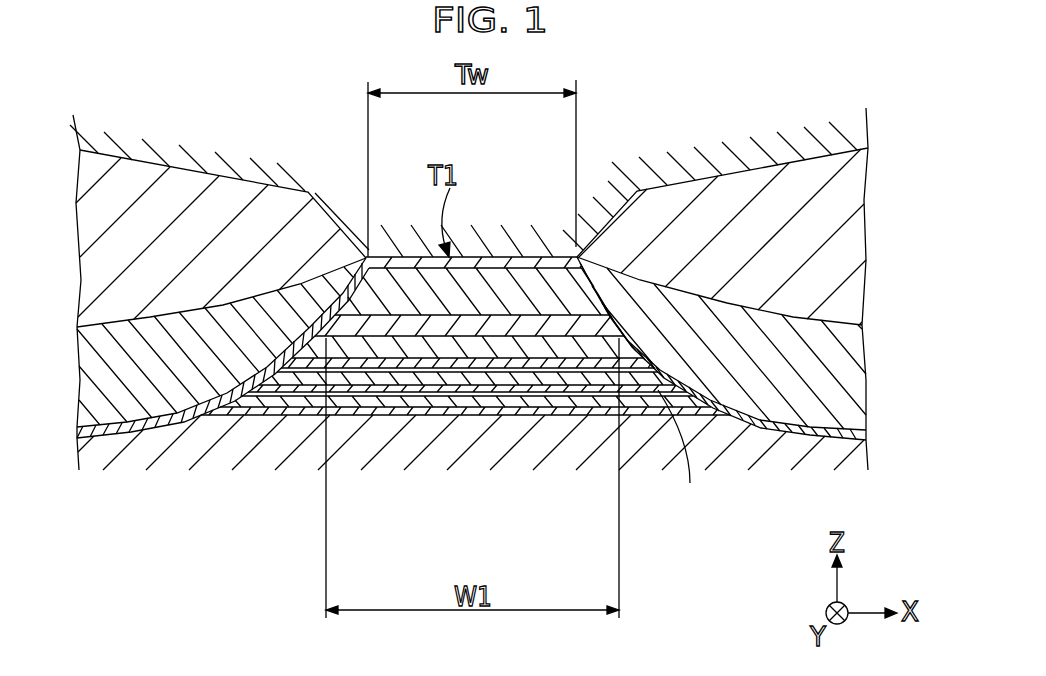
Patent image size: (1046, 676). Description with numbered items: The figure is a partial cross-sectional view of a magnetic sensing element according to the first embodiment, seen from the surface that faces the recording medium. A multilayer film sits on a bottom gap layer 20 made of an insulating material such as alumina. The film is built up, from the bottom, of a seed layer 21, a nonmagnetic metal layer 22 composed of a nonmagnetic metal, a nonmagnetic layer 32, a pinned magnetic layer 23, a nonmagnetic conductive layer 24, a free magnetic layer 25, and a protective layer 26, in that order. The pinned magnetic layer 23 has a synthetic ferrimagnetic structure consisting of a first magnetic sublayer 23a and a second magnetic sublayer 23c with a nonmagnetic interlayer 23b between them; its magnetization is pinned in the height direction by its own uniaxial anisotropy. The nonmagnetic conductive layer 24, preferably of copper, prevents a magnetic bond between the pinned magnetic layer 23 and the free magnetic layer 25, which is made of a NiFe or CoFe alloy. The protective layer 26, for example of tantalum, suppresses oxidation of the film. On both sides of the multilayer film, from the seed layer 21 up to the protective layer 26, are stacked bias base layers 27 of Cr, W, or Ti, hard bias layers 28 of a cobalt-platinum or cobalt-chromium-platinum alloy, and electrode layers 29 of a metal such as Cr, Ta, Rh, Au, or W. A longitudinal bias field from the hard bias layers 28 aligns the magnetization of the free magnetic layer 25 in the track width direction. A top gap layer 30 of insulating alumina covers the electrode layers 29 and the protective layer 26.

The bottom gap layer 20 is at (293, 432).
The seed layer 21 is at (357, 412).
The nonmagnetic metal layer 22 is at (410, 404).
The pinned magnetic layer 23 is at (467, 461).
The first magnetic sublayer 23a is at (515, 381).
The nonmagnetic interlayer 23b is at (551, 370).
The second magnetic sublayer 23c is at (583, 355).
The nonmagnetic conductive layer 24 is at (557, 327).
The free magnetic layer 25 is at (495, 287).
The protective layer 26 is at (405, 263).
The bias base layer 27 is at (175, 422).
The hard bias layer 28 is at (217, 333).
The electrode layer 29 is at (131, 187).
The top gap layer 30 is at (848, 125).
The nonmagnetic layer 32 is at (681, 456).